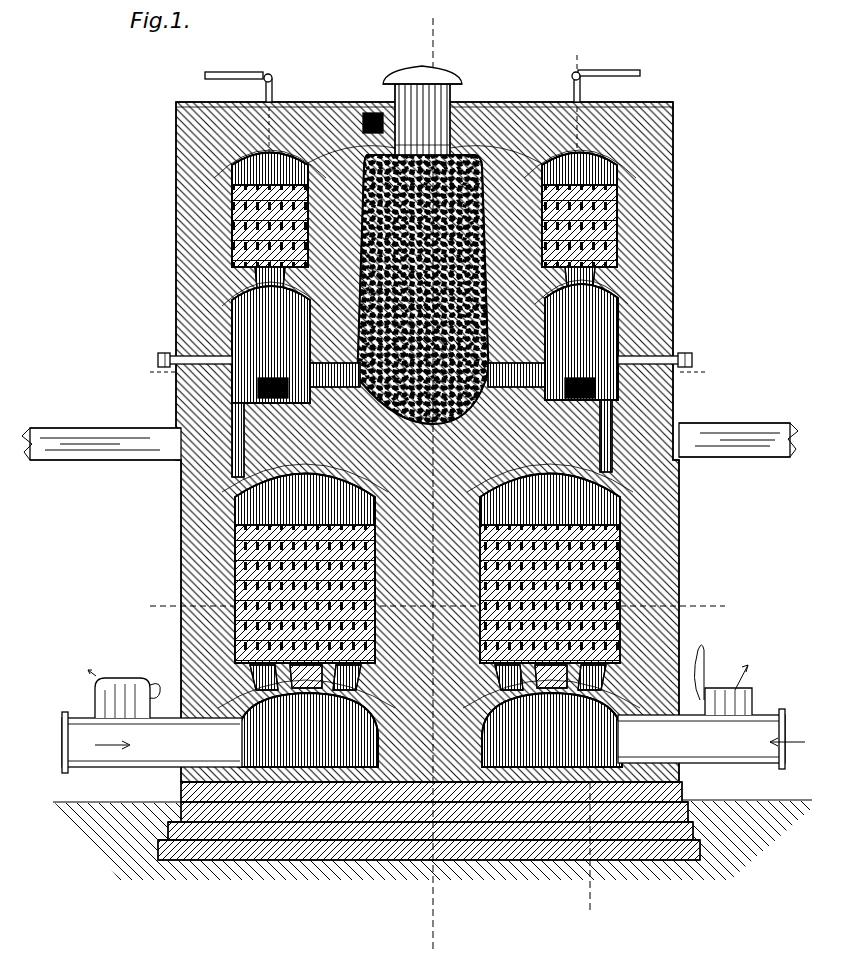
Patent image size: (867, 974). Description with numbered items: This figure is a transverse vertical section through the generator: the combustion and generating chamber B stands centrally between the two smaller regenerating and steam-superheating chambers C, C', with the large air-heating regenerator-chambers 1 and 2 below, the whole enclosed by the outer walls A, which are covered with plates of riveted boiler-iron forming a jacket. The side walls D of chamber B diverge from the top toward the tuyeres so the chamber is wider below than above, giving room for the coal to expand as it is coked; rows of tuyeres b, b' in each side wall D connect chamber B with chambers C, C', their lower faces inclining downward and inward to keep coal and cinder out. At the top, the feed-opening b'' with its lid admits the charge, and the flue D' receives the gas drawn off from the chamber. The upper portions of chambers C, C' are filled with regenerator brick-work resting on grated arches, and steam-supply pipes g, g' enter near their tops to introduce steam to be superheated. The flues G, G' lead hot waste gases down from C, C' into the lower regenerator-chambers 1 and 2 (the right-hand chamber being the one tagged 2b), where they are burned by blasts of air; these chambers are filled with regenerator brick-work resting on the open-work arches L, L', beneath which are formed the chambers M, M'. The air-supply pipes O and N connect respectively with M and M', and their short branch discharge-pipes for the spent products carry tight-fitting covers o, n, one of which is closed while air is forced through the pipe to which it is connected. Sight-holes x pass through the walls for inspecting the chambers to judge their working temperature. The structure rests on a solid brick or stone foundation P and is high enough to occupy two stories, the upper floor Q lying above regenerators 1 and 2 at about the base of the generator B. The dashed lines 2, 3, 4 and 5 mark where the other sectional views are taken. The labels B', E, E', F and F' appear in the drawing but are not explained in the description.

The outer walls A is at (427, 442).
The combustion and generating chamber B is at (424, 285).
The right upper regenerative chamber B' is at (574, 208).
The tuyere b is at (427, 387).
The tuyere b' is at (422, 119).
The feed-opening b'' is at (415, 79).
The regenerating and steam-superheating chamber C is at (271, 342).
The regenerating and steam-superheating chamber C' is at (581, 340).
The side wall D is at (275, 210).
The flue D' is at (358, 123).
The left throat E is at (279, 279).
The right throat E' is at (590, 276).
The left port F is at (273, 399).
The right port F' is at (577, 399).
The flue G is at (225, 440).
The flue G' is at (625, 436).
The open-work arch L is at (306, 686).
The open-work arch L' is at (551, 686).
The chamber M is at (308, 730).
The chamber M' is at (552, 730).
The air-supply pipe N is at (711, 728).
The tight-fitting cover n is at (715, 662).
The air-supply pipe O is at (152, 725).
The tight-fitting cover o is at (124, 680).
The foundation P is at (432, 831).
The upper floor Q is at (410, 452).
The steam-supply pipe g is at (238, 116).
The steam-supply pipe g' is at (606, 86).
The sight-hole x is at (428, 356).
The air-heating regenerator-chamber 1 is at (305, 563).
The air-heating regenerator-chamber 2 is at (433, 485).
The right regenerator chamber 2b is at (550, 563).
The section line 3 3 is at (582, 485).
The section line 4 4 is at (426, 367).
The section line 5 5 is at (436, 607).